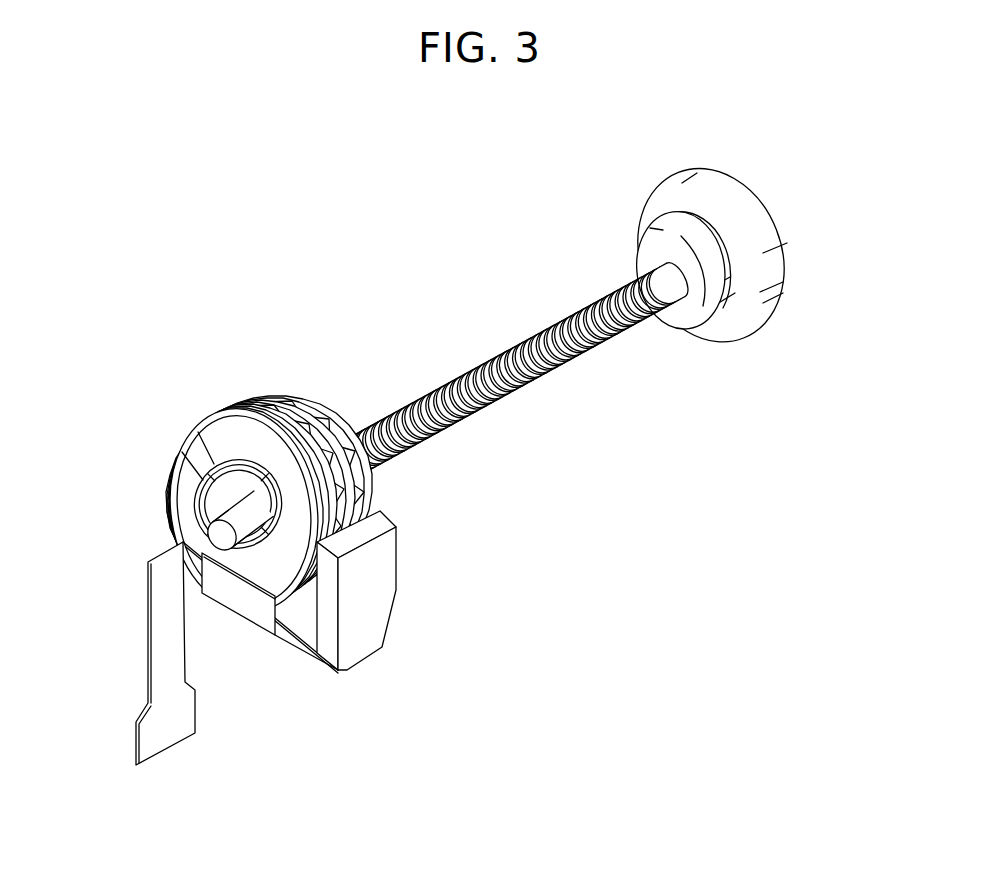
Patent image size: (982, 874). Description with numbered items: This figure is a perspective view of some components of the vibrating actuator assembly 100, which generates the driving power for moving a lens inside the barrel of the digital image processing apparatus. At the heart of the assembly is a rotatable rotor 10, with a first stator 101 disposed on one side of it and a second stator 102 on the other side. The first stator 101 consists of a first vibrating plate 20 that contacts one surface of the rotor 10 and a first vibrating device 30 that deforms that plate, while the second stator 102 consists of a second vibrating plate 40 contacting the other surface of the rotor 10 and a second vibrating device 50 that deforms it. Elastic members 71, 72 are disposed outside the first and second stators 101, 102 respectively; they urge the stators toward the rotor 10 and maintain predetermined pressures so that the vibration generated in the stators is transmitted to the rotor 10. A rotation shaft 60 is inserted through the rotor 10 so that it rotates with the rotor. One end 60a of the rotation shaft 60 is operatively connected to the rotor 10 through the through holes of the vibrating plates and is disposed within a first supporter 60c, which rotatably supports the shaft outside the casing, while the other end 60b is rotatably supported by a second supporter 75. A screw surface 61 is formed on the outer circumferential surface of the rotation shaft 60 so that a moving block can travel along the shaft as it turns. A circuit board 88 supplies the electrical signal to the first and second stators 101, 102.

The vibrating actuator assembly 100 is at (210, 261).
The first stator 101 is at (273, 638).
The rotor 10 is at (372, 513).
The first vibrating plate 20 is at (340, 560).
The first vibrating device 30 is at (332, 543).
The second stator 102 is at (266, 450).
The second vibrating plate 40 is at (293, 418).
The second vibrating device 50 is at (315, 421).
The rotation shaft 60 is at (408, 465).
The one end of the rotation shaft 60a is at (257, 518).
The other end of the rotation shaft 60b is at (690, 328).
The first supporter 60c is at (212, 531).
The screw surface 61 is at (565, 322).
The elastic member 71 is at (177, 495).
The elastic member 72 is at (325, 427).
The second supporter 75 is at (682, 226).
The circuit board 88 is at (146, 736).